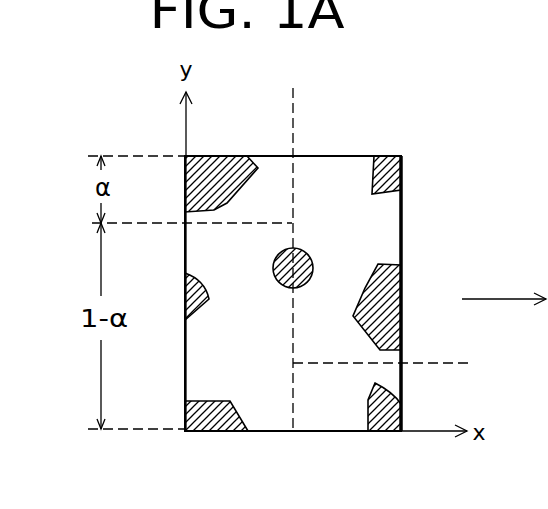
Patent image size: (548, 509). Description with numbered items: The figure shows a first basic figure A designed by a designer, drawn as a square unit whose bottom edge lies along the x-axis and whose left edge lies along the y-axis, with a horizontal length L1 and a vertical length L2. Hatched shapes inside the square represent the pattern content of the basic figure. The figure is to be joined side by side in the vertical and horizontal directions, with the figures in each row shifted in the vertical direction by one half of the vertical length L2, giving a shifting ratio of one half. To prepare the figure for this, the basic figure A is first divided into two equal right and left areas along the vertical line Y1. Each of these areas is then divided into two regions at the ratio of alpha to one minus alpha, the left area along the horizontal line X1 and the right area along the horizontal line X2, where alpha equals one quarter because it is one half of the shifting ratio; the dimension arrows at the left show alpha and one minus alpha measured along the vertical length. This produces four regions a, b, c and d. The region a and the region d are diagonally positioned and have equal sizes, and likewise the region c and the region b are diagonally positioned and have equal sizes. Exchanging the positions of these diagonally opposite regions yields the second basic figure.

The horizontal length L1 is at (401, 312).
The vertical length L2 is at (136, 135).
The dividing line X1 is at (161, 222).
The dividing line X2 is at (401, 365).
The dividing line Y1 is at (296, 243).
The region a is at (318, 387).
The region b is at (225, 375).
The region c is at (330, 210).
The region d is at (271, 207).